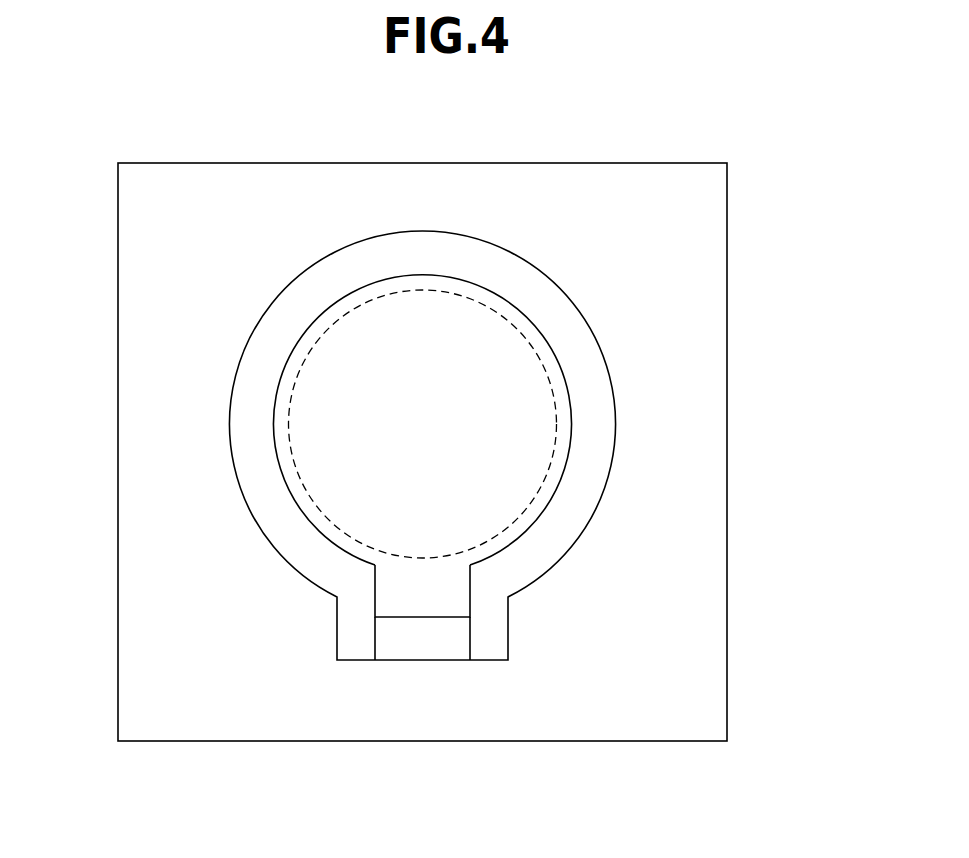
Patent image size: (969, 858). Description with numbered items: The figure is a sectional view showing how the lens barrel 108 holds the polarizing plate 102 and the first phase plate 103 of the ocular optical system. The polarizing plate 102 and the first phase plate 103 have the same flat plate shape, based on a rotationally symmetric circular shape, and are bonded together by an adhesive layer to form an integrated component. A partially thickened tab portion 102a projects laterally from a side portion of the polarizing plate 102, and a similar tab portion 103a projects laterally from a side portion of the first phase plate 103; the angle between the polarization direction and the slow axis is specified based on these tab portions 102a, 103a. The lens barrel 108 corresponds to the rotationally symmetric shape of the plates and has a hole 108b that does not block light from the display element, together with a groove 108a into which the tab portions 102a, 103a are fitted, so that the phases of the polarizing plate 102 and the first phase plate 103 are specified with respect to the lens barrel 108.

The lens barrel 108 is at (417, 248).
The groove 108a is at (375, 636).
The hole 108b is at (325, 430).
The polarizing plate 102 is at (576, 424).
The first phase plate 103 is at (513, 432).
The tab portion 102a is at (635, 591).
The tab portion 103a is at (450, 595).